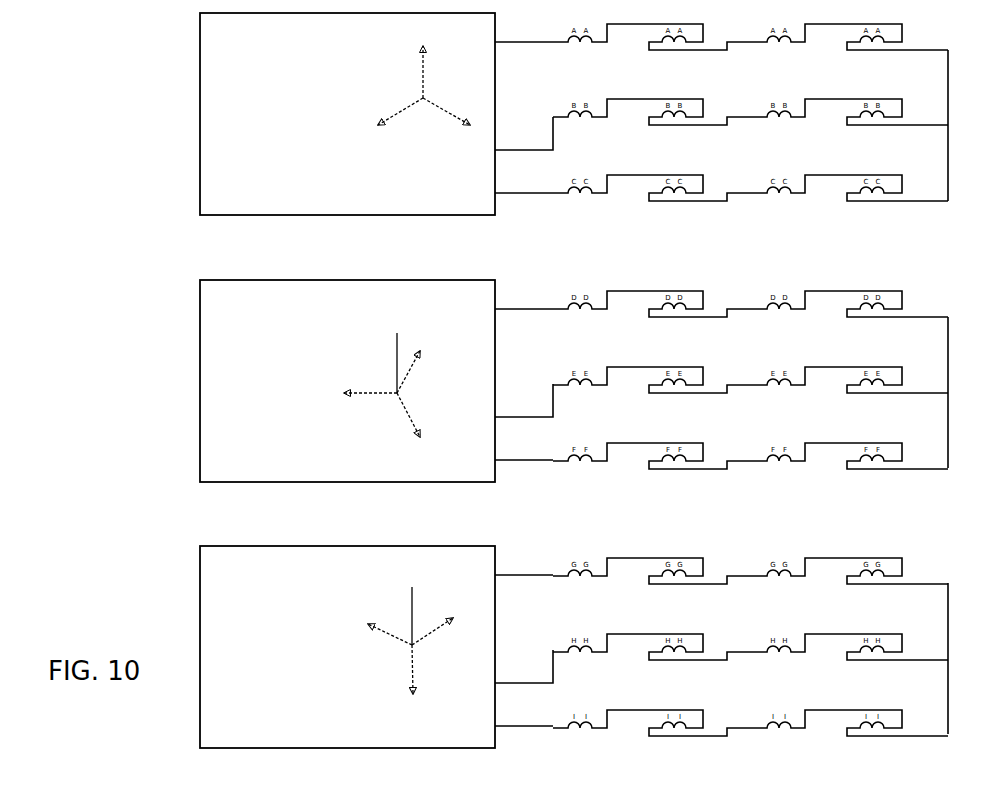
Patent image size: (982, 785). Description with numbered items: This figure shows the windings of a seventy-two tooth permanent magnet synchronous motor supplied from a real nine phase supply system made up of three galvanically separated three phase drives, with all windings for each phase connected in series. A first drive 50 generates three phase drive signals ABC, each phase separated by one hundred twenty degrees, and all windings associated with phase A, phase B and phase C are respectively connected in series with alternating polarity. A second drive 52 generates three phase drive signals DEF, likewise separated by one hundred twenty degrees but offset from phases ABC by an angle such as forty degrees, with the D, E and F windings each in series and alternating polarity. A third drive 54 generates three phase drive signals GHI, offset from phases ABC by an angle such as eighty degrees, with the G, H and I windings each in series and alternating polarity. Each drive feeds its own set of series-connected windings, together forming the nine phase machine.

The first drive 50 is at (200, 56).
The second drive 52 is at (200, 328).
The third drive 54 is at (200, 606).